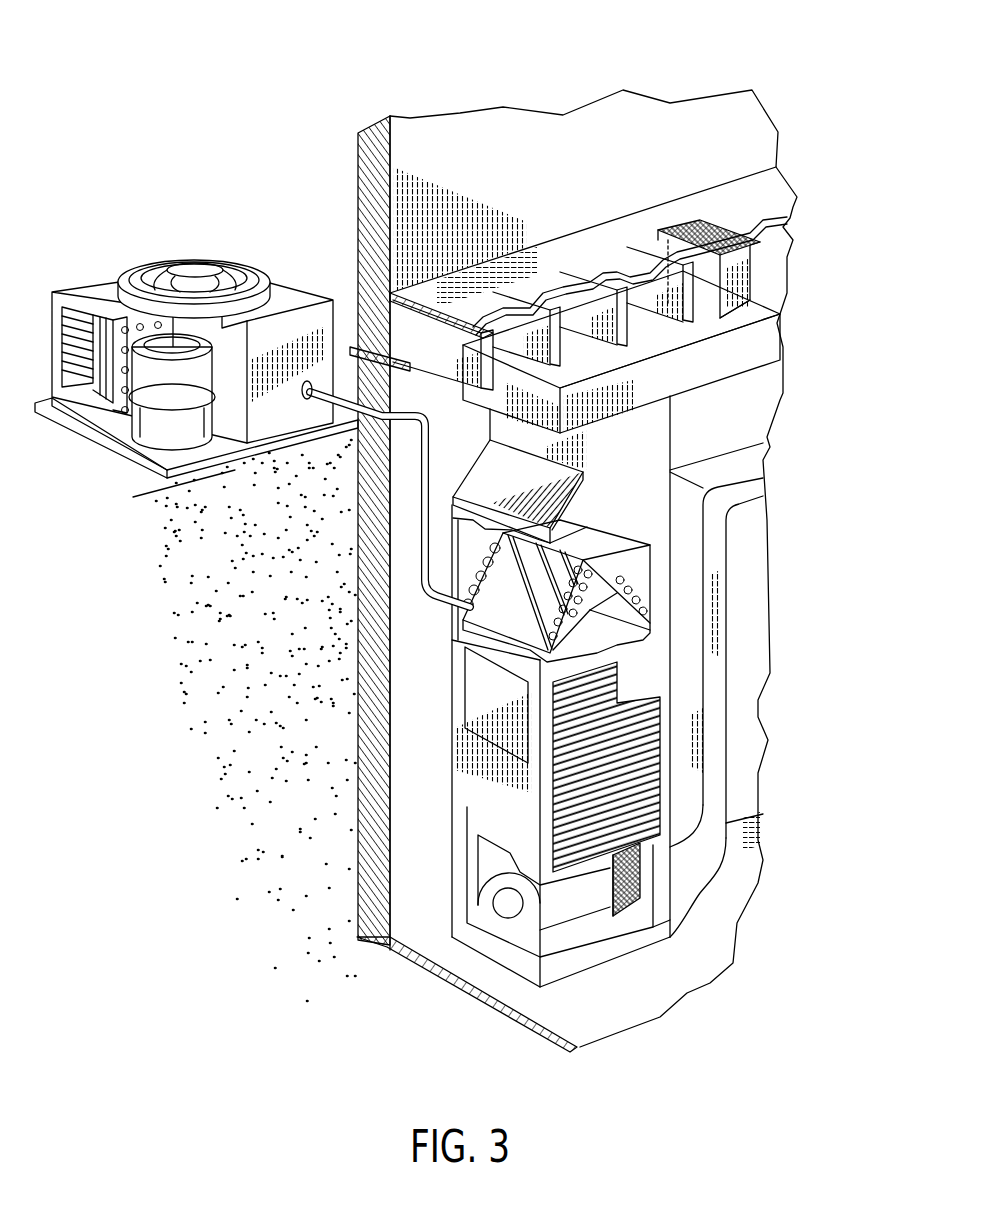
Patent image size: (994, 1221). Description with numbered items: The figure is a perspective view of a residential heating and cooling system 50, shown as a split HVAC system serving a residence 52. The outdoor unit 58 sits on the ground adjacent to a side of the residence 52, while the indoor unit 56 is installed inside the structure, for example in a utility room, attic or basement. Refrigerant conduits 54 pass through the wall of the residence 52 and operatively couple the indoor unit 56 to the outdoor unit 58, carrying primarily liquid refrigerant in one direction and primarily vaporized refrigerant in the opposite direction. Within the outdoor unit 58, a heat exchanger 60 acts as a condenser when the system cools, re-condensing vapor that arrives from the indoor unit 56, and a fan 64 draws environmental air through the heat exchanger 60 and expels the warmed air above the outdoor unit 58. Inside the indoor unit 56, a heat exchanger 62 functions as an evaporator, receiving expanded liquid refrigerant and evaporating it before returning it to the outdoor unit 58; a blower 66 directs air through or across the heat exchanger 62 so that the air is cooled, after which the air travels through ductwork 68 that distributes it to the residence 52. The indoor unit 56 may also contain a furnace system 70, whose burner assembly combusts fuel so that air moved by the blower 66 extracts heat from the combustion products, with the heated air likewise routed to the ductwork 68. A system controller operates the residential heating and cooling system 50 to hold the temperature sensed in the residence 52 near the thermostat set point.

The residential heating and cooling system 50 is at (192, 87).
The residence 52 is at (488, 135).
The refrigerant conduits 54 is at (420, 506).
The indoor unit 56 is at (432, 743).
The outdoor unit 58 is at (155, 248).
The heat exchanger 60 is at (127, 320).
The heat exchanger 62 is at (513, 620).
The fan 64 is at (212, 257).
The blower 66 is at (502, 928).
The ductwork 68 is at (737, 307).
The furnace system 70 is at (507, 681).